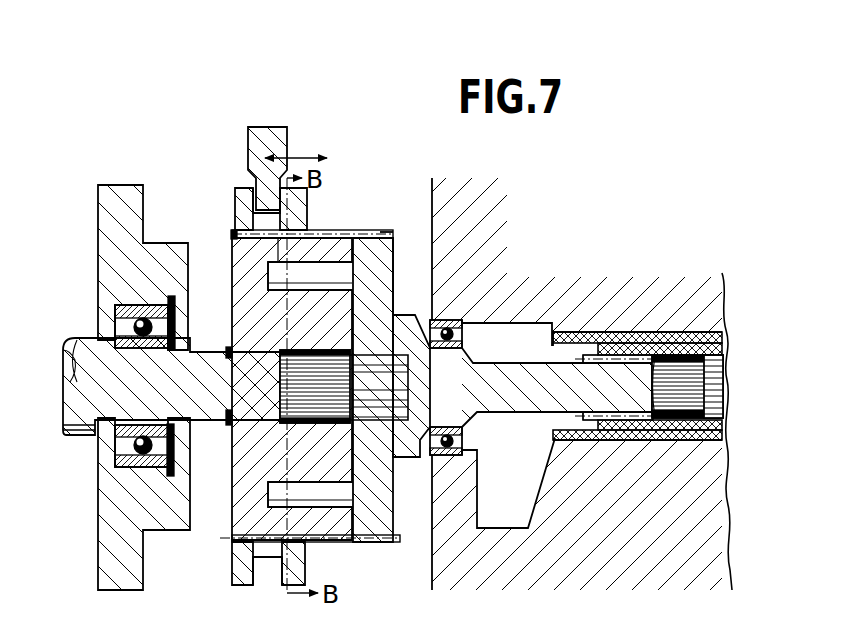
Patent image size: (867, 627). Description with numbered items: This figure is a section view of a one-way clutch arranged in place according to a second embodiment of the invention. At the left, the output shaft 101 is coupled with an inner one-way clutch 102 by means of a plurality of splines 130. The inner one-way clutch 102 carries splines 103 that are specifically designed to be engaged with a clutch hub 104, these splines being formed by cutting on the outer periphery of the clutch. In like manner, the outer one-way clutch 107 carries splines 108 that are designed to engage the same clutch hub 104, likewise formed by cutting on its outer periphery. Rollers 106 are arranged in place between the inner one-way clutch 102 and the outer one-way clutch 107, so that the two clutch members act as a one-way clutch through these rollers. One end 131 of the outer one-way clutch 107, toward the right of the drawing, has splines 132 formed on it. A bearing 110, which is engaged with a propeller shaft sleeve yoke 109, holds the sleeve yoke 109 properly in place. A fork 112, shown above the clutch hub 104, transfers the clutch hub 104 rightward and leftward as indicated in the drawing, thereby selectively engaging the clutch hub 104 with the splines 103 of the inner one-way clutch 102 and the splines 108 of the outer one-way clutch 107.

The output shaft 101 is at (169, 412).
The inner one-way clutch 102 is at (232, 258).
The splines 103 is at (232, 234).
The clutch hub 104 is at (300, 202).
The rollers 106 is at (324, 274).
The outer one-way clutch 107 is at (387, 273).
The splines 108 is at (373, 232).
The propeller shaft sleeve yoke 109 is at (643, 428).
The bearing 110 is at (687, 440).
The fork 112 is at (288, 138).
The splines 130 is at (245, 420).
The one end of the outer one-way clutch 131 is at (693, 387).
The splines 132 is at (640, 355).